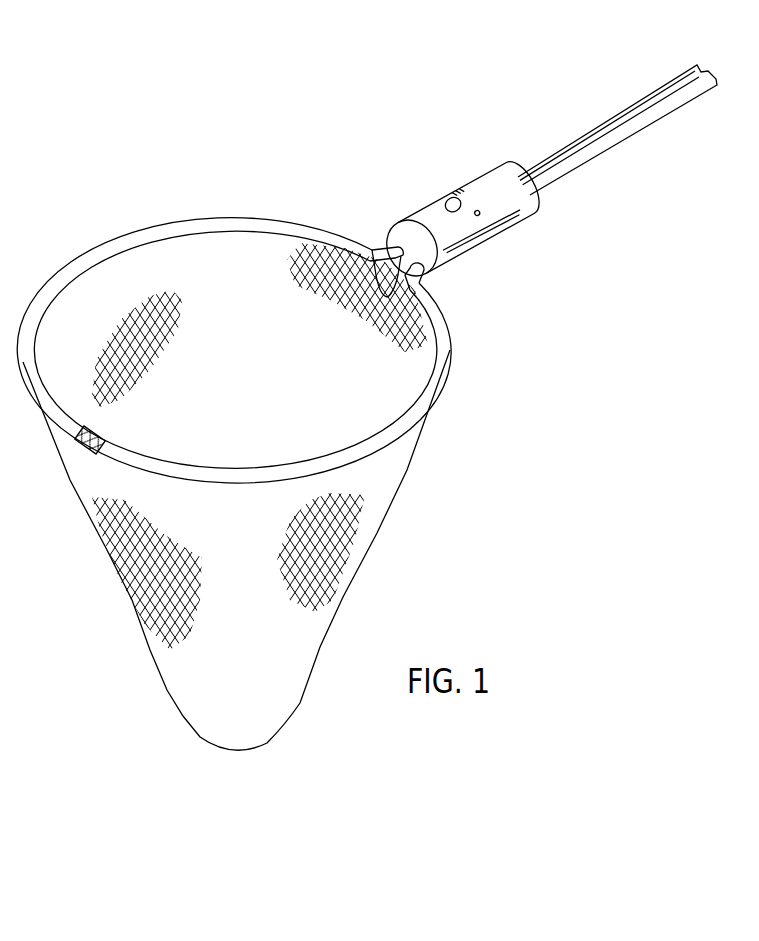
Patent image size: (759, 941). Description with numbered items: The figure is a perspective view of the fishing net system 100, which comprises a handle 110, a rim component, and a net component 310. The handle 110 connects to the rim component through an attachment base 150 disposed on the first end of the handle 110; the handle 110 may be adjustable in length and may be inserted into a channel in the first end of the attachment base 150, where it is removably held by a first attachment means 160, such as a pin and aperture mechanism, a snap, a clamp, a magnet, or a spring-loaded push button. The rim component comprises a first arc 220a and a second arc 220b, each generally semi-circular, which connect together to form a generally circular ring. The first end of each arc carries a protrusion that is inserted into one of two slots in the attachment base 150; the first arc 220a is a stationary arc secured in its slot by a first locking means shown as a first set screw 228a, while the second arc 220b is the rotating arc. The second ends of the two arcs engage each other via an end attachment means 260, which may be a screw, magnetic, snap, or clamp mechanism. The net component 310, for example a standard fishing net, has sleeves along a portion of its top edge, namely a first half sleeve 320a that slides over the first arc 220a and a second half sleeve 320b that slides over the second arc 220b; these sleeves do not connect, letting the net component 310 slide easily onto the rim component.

The system 100 is at (340, 778).
The handle 110 is at (580, 147).
The attachment base 150 is at (420, 213).
The first attachment means 160 is at (453, 197).
The first set screw 228a is at (460, 187).
The first arc 220a is at (135, 242).
The first half sleeve 320a is at (194, 332).
The second arc 220b is at (442, 388).
The second half sleeve 320b is at (269, 383).
The end attachment means 260 is at (87, 450).
The net component 310 is at (190, 640).